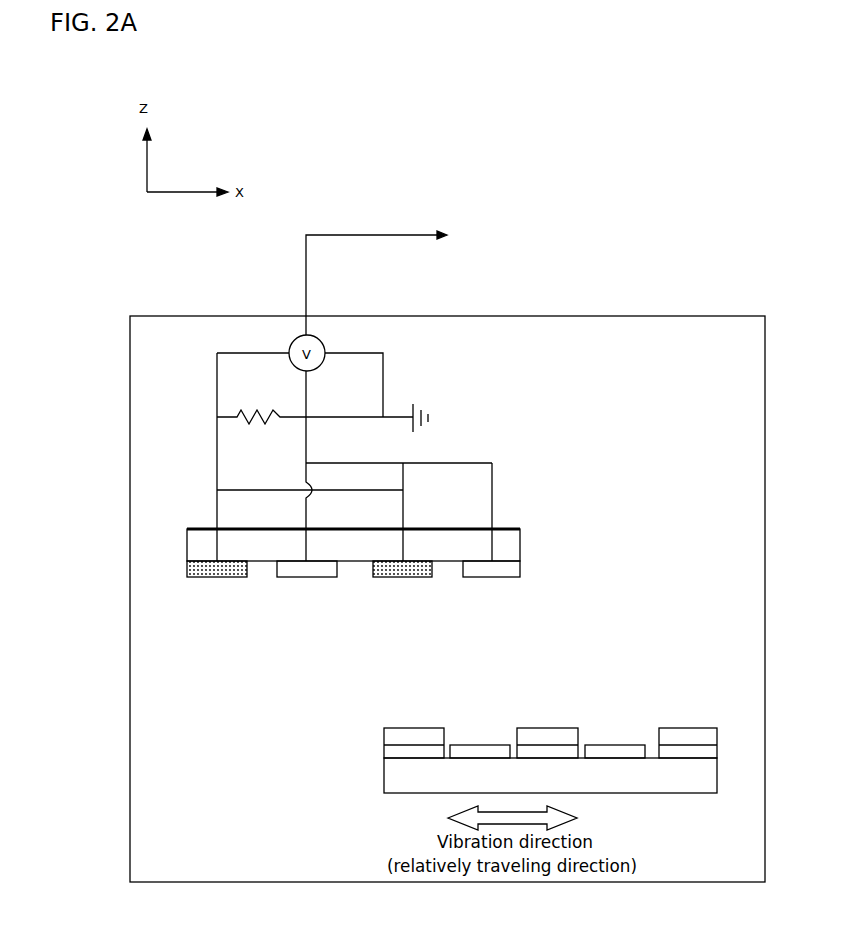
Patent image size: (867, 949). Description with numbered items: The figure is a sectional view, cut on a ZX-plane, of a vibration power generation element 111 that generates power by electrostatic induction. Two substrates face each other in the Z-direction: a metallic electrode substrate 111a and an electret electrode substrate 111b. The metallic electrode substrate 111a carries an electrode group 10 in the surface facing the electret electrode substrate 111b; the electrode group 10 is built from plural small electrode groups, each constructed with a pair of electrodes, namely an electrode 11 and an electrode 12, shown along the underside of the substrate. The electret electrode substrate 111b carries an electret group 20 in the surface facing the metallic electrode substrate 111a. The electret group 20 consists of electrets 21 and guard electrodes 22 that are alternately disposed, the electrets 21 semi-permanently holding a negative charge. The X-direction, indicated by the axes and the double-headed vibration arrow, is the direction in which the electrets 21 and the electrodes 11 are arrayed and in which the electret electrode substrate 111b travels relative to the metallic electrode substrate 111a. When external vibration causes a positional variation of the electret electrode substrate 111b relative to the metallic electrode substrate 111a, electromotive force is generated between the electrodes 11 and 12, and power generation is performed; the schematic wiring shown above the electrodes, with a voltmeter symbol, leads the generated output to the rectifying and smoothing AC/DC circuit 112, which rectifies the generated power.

The electrode group 10 is at (360, 613).
The electrode 11 is at (236, 579).
The electrode 12 is at (327, 579).
The electret group 20 is at (558, 702).
The electret 21 is at (394, 726).
The guard electrode 22 is at (457, 743).
The vibration power generation element 111 is at (688, 316).
The metallic electrode substrate 111a is at (514, 531).
The electret electrode substrate 111b is at (660, 794).
The rectifying and smoothing AC/DC circuit 112 is at (499, 276).